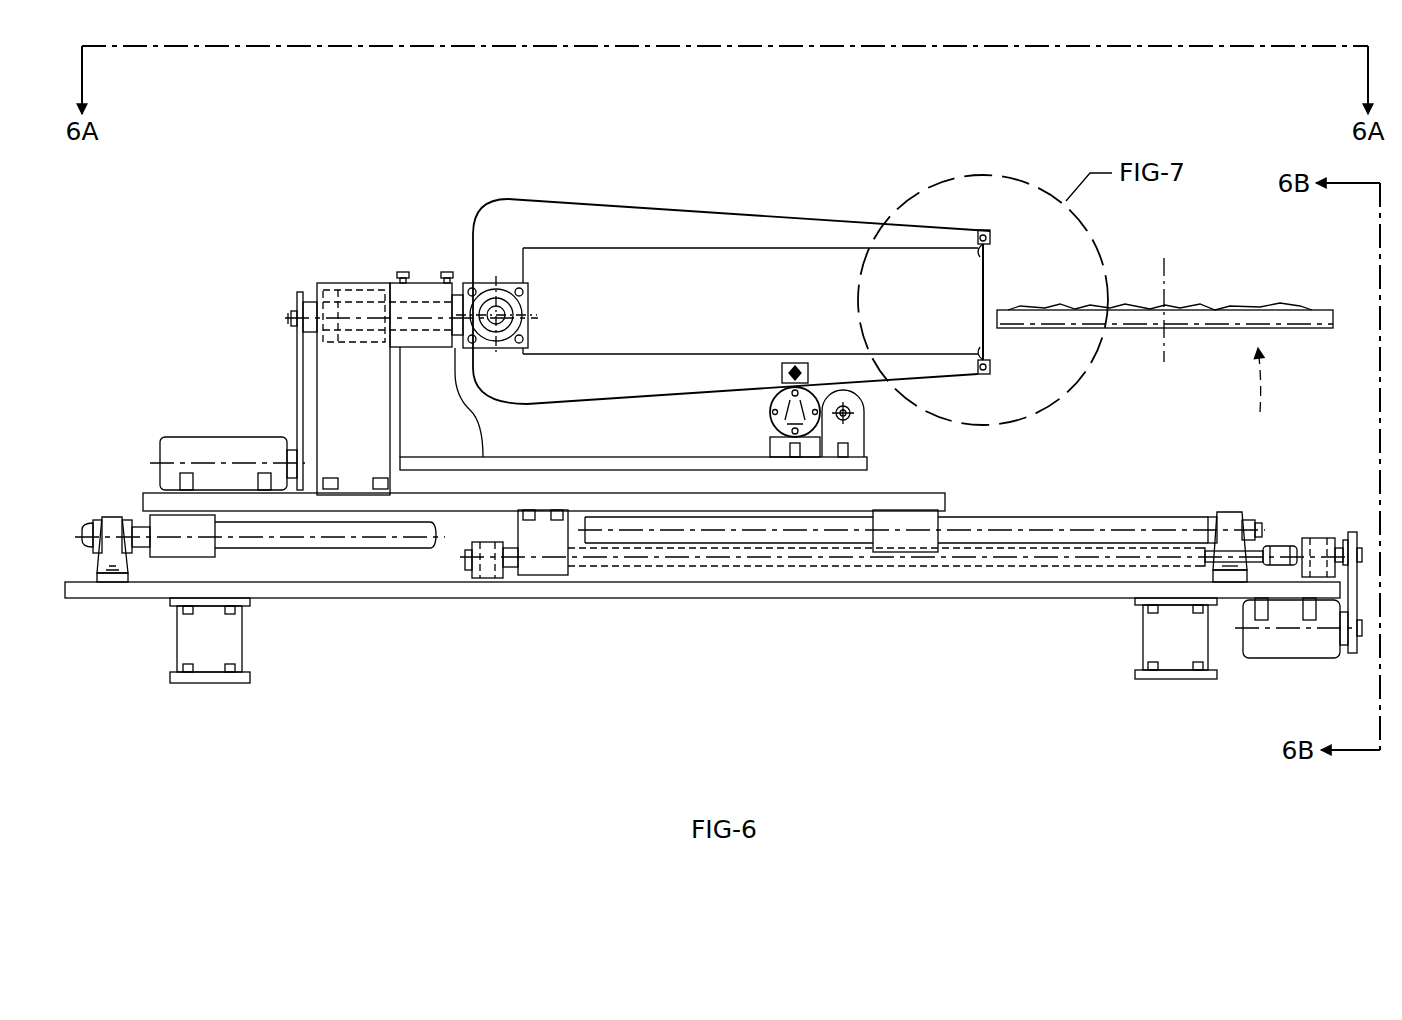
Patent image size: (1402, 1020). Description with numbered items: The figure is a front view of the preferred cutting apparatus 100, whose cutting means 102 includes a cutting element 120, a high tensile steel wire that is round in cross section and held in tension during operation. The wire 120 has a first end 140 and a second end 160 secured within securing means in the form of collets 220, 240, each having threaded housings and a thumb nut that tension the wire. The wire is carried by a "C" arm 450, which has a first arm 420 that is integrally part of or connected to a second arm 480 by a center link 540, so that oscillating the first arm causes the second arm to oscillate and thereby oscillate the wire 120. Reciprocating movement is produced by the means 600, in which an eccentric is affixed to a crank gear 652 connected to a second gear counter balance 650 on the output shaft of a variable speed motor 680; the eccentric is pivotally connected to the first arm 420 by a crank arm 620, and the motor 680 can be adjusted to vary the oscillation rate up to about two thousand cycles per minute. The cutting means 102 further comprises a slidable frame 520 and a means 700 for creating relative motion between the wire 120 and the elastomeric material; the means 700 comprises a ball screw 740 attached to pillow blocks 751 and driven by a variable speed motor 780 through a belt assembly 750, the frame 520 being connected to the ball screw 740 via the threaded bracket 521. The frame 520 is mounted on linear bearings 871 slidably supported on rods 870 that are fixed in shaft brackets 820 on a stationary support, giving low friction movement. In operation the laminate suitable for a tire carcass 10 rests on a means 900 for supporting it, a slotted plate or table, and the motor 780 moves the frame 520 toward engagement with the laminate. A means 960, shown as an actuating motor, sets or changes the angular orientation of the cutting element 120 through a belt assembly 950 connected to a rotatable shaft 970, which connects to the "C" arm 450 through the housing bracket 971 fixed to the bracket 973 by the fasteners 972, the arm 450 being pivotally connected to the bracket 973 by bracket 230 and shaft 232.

The tire carcass 10 is at (1228, 300).
The cutting apparatus 100 is at (260, 317).
The cutting means 102 is at (452, 254).
The cutting element 120 is at (986, 283).
The first end 140 is at (987, 365).
The second end 160 is at (987, 241).
The collet 220 is at (977, 253).
The bracket 230 is at (527, 324).
The shaft 232 is at (504, 309).
The collet 240 is at (977, 357).
The first arm 420 is at (628, 376).
The C arm 450 is at (716, 212).
The second arm 480 is at (790, 226).
The slidable frame 520 is at (938, 497).
The threaded bracket 521 is at (548, 537).
The center link 540 is at (507, 252).
The means for creating reciprocating movement 600 is at (788, 388).
The crank arm 620 is at (805, 362).
The second gear counter balance 650 is at (862, 409).
The crank gear 652 is at (767, 413).
The variable speed motor 680 is at (786, 428).
The means for creating relative motion 700 is at (1236, 634).
The ball screw 740 is at (1282, 549).
The belt assembly 750 is at (1354, 600).
The pillow blocks 751 is at (490, 577).
The variable speed motor 780 is at (1264, 647).
The shaft brackets 820 is at (112, 521).
The rods 870 is at (345, 541).
The linear bearings 871 is at (172, 550).
The means for supporting the laminate 900 is at (1263, 401).
The belt assembly 950 is at (300, 368).
The means for setting angular orientation 960 is at (192, 445).
The rotatable shaft 970 is at (291, 316).
The housing bracket 971 is at (352, 290).
The fasteners 972 is at (447, 271).
The bracket 973 is at (484, 433).